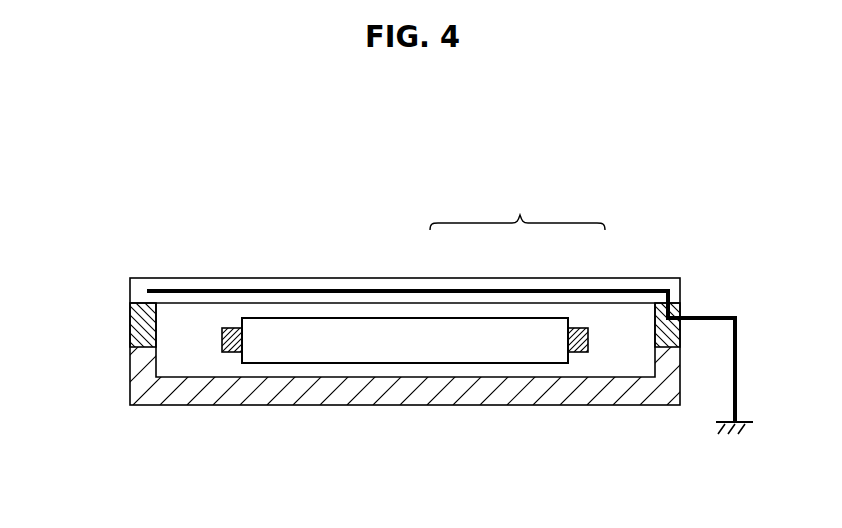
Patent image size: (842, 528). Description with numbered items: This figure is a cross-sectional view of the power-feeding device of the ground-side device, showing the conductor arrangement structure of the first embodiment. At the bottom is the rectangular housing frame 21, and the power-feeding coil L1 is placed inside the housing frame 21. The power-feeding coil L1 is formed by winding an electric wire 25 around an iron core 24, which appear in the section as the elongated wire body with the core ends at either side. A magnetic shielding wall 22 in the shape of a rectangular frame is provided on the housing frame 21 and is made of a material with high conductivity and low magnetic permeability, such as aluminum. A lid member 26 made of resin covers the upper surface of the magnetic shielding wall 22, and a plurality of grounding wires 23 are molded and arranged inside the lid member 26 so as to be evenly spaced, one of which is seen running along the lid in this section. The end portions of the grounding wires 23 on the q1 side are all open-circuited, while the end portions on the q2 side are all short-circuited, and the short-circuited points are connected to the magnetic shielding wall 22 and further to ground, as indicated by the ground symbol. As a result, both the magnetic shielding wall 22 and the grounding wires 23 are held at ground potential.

The housing frame 21 is at (421, 405).
The magnetic shielding wall 22 is at (138, 323).
The grounding wire 23 is at (218, 290).
The iron core 24 is at (583, 328).
The electric wire 25 is at (452, 328).
The lid member 26 is at (370, 278).
The one end portion side of grounding wires q1 is at (165, 290).
The other end portion side of grounding wires q2 is at (652, 290).
The power-feeding coil L1 is at (517, 210).